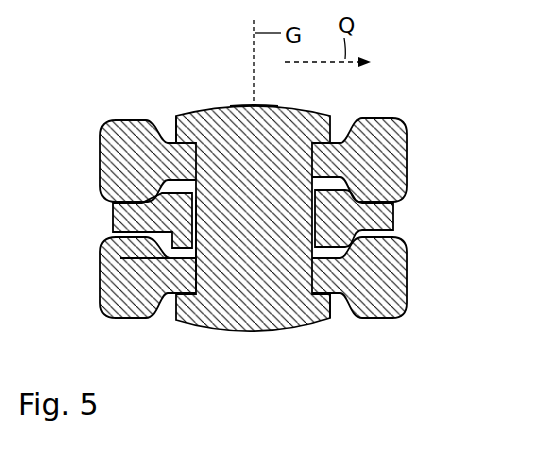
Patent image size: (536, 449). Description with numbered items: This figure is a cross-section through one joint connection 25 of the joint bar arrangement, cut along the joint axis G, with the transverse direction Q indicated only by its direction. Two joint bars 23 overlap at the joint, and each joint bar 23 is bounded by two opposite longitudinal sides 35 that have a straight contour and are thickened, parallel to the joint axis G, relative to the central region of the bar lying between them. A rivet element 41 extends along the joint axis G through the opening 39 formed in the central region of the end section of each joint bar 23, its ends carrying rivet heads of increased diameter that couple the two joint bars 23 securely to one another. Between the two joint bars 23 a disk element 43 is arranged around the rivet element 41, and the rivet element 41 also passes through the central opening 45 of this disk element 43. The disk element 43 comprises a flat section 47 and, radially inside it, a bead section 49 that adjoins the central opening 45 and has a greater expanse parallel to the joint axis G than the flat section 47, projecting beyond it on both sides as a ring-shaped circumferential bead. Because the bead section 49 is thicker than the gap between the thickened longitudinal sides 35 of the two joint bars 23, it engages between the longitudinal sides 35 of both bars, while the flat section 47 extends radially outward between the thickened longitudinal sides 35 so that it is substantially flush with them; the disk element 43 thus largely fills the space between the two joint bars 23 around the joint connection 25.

The rivet element 41 is at (227, 157).
The joint connection 25 is at (250, 107).
The opening 39 is at (208, 130).
The central opening 45 is at (197, 223).
The longitudinal sides 35 is at (118, 137).
The joint bar 23 is at (338, 140).
The flat section 47 is at (133, 205).
The bead section 49 is at (122, 258).
The disk element 43 is at (367, 222).